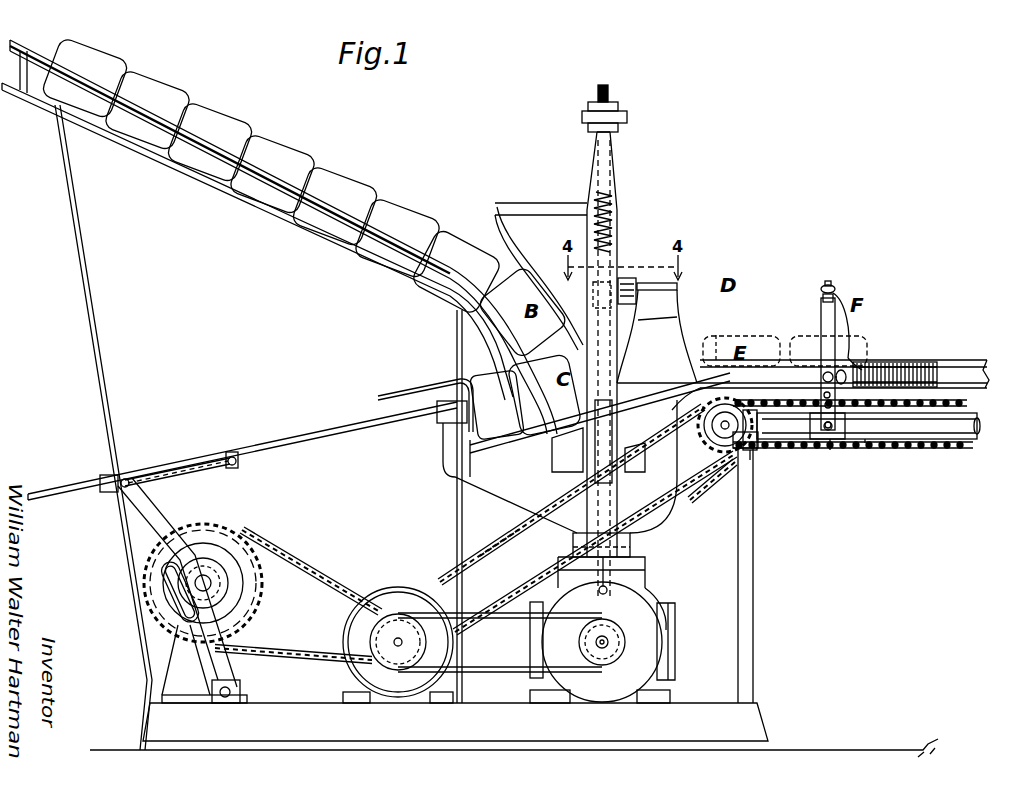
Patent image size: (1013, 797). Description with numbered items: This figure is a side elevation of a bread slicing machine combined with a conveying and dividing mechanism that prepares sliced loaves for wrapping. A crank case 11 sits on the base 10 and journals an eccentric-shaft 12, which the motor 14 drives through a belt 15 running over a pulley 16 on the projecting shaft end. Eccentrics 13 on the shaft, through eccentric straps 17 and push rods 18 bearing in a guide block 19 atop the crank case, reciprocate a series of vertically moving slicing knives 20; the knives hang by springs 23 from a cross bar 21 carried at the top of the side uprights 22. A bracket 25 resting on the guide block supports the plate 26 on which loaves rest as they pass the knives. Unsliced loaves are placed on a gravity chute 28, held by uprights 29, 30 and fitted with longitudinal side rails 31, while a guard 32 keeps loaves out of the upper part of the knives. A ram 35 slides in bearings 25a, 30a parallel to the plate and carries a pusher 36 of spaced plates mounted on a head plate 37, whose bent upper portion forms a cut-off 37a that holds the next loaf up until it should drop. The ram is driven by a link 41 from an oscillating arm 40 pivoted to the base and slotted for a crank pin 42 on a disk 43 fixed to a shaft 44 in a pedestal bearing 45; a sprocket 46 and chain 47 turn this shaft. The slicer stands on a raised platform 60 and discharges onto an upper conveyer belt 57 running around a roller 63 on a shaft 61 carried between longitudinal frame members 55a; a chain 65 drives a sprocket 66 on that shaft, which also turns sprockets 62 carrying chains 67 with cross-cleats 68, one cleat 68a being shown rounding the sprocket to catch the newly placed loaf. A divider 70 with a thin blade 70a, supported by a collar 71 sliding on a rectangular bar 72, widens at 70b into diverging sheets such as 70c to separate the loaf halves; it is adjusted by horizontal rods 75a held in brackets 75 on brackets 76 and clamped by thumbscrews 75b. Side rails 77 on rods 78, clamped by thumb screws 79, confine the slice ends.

The base 10 is at (750, 718).
The crank case 11 is at (630, 598).
The eccentric-shaft 12 is at (608, 642).
The eccentrics 13 is at (628, 635).
The motor 14 is at (398, 596).
The belt 15 is at (508, 668).
The pulley 16 is at (578, 668).
The eccentric straps 17 is at (650, 585).
The push rods 18 is at (630, 560).
The guide block 19 is at (632, 545).
The slicing knives 20 is at (610, 282).
The cross bar 21 is at (627, 116).
The side uprights 22 is at (618, 226).
The springs 23 is at (602, 194).
The bracket 25 is at (586, 453).
The bearing 25a is at (438, 428).
The plate 26 is at (576, 432).
The gravity chute 28 is at (232, 212).
The upright 29 is at (456, 512).
The upright 30 is at (92, 323).
The bearing 30a is at (114, 475).
The longitudinal side rails 31 is at (298, 143).
The guard 32 is at (524, 250).
The ram 35 is at (318, 430).
The pusher 36 is at (484, 380).
The head plate 37 is at (460, 382).
The cut-off 37a is at (406, 395).
The oscillating arm 40 is at (150, 510).
The link 41 is at (220, 456).
The crank pin 42 is at (178, 594).
The disk 43 is at (225, 560).
The shaft 44 is at (210, 586).
The pedestal bearing 45 is at (182, 672).
The sprocket 46 is at (222, 532).
The chain 47 is at (333, 568).
The longitudinal frame members 55a is at (848, 440).
The upper conveyer belt 57 is at (888, 439).
The platform 60 is at (930, 738).
The shaft 61 is at (757, 440).
The sprockets 62 is at (752, 452).
The roller 63 is at (714, 434).
The chain 65 is at (505, 542).
The sprocket 66 is at (700, 470).
The chains 67 is at (935, 400).
The cross-cleats 68 is at (796, 478).
The cleat 68a is at (700, 432).
The divider 70 is at (808, 338).
The blade 70a is at (658, 336).
The junction 70b is at (870, 360).
The sheet 70c is at (918, 362).
The collar 71 is at (636, 297).
The rectangular bar 72 is at (677, 300).
The brackets 75 is at (826, 320).
The horizontal rods 75a is at (838, 325).
The thumbscrews 75b is at (832, 288).
The brackets 76 is at (832, 452).
The side rails 77 is at (713, 372).
The rods 78 is at (848, 368).
The thumb screws 79 is at (868, 443).